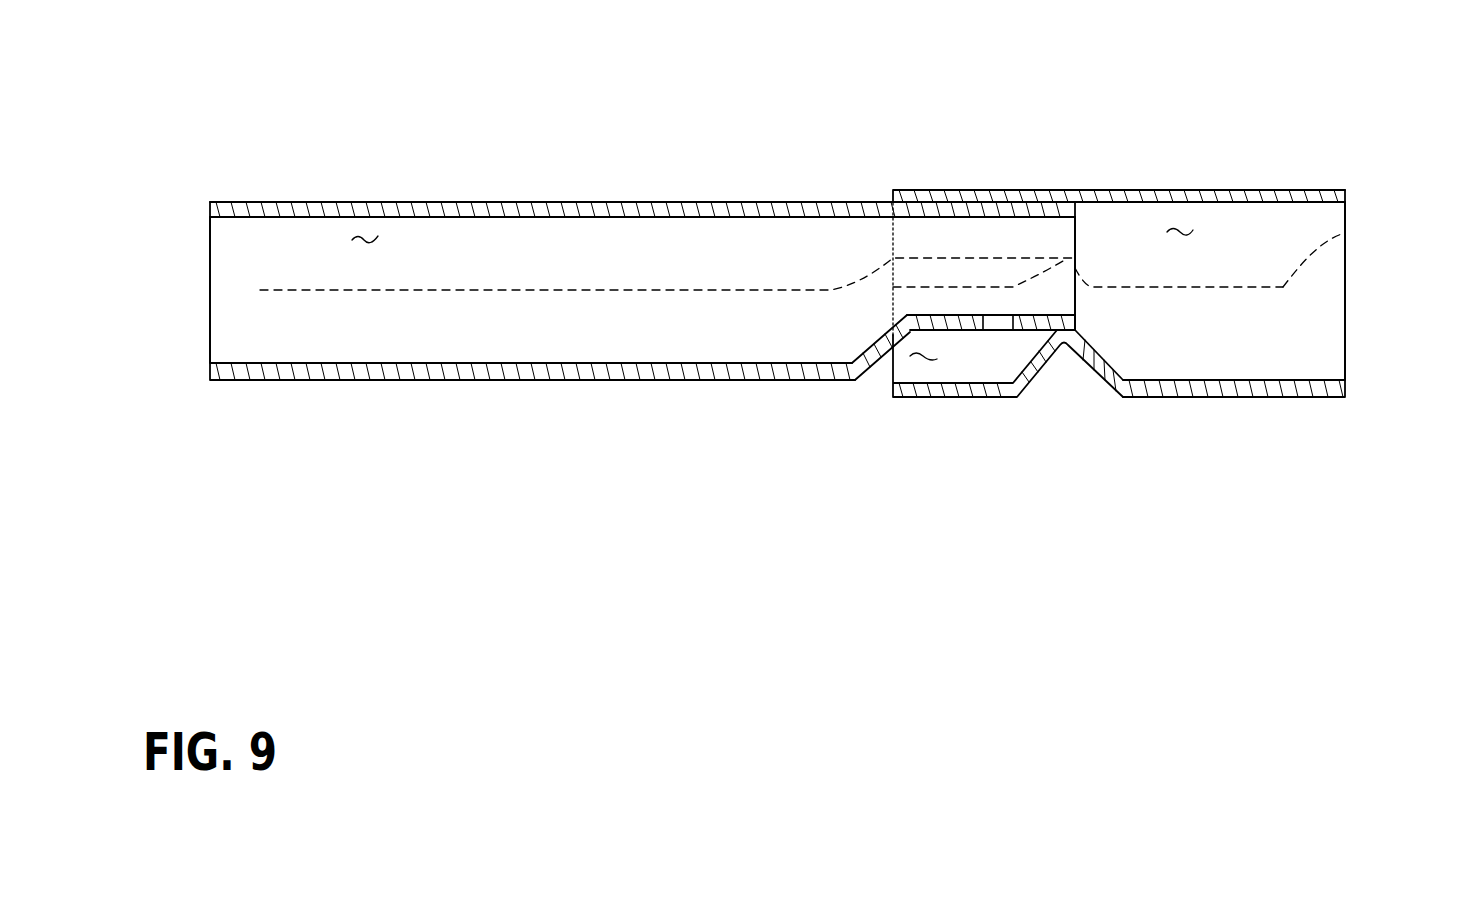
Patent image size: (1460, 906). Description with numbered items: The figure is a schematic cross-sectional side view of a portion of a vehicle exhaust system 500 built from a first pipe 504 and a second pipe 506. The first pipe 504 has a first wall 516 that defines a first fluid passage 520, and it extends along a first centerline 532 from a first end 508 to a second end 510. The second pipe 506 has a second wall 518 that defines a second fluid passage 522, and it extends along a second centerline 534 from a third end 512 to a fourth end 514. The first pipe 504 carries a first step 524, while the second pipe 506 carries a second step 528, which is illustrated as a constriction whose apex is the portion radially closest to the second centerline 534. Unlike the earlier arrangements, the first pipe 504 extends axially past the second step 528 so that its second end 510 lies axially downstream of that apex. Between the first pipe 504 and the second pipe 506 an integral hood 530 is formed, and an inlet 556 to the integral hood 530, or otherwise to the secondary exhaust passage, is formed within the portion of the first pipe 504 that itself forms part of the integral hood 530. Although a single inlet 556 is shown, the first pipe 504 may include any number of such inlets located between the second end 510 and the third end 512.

The vehicle exhaust system 500 is at (288, 78).
The first pipe 504 is at (685, 288).
The second pipe 506 is at (1170, 295).
The first end 508 is at (208, 333).
The second end 510 is at (1075, 236).
The third end 512 is at (893, 368).
The fourth end 514 is at (1347, 272).
The first wall 516 is at (564, 203).
The second wall 518 is at (1283, 190).
The first fluid passage 520 is at (360, 237).
The second fluid passage 522 is at (1183, 227).
The first step 524 is at (868, 343).
The second step 528 is at (1042, 367).
The integral hood 530 is at (923, 367).
The first centerline 532 is at (260, 290).
The second centerline 534 is at (1345, 233).
The inlet 556 is at (983, 322).